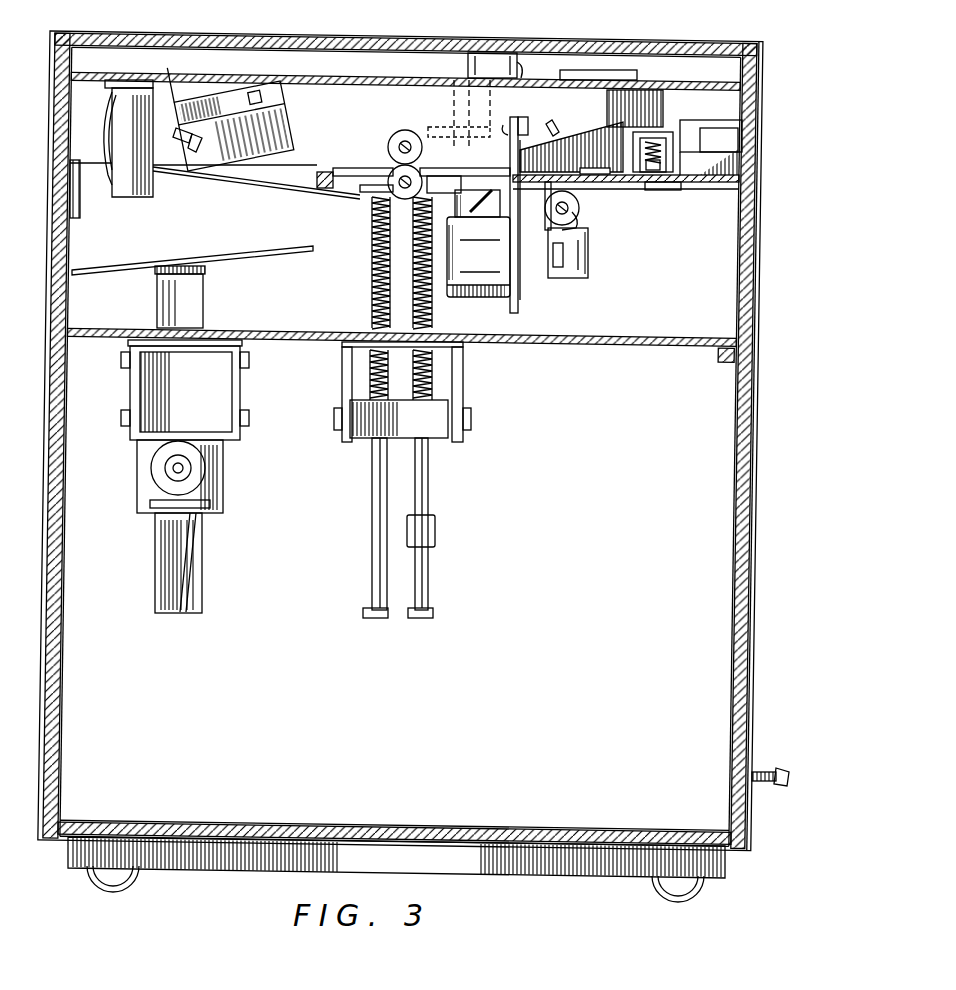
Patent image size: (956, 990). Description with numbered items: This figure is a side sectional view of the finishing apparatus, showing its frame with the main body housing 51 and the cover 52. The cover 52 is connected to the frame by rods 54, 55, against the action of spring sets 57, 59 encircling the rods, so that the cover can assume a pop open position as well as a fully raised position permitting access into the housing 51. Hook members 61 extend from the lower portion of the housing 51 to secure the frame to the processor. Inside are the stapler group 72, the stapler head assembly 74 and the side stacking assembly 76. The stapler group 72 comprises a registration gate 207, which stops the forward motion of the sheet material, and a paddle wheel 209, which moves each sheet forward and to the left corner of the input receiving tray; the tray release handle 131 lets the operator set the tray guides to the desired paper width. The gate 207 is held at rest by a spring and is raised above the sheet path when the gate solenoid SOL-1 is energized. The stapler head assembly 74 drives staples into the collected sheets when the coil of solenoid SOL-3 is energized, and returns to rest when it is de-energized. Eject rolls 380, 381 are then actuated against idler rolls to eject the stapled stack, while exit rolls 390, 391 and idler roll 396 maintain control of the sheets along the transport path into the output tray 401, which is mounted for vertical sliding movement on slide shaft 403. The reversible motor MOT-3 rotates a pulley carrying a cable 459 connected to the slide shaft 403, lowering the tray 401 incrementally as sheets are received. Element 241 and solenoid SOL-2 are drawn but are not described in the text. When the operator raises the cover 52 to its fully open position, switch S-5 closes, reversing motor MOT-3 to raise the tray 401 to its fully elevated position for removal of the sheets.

The main body housing 51 is at (762, 425).
The cover 52 is at (621, 38).
The rod 54 is at (370, 583).
The rod 55 is at (428, 580).
The spring set 57 is at (369, 300).
The spring set 59 is at (361, 378).
The hook member 61 is at (770, 770).
The stapler group 72 is at (598, 125).
The stapler head assembly 74 is at (527, 286).
The side stacking assembly 76 is at (342, 125).
The tray release handle 131 is at (668, 183).
The registration gate 207 is at (508, 124).
The paddle wheel 209 is at (585, 163).
The solenoid armature 241 is at (457, 220).
The eject roll 380 is at (581, 208).
The eject roll 381 is at (579, 224).
The exit roll 390 is at (381, 166).
The exit roll 391 is at (375, 210).
The idler roll 396 is at (408, 130).
The tray 401 is at (278, 246).
The slide shaft 403 is at (155, 598).
The cable 459 is at (196, 553).
The gate solenoid SOL-1 is at (468, 66).
The solenoid 2 SOL-2 is at (482, 297).
The solenoid SOL-3 is at (587, 262).
The reversible motor MOT-3 is at (155, 467).
The switch S-5 is at (437, 530).